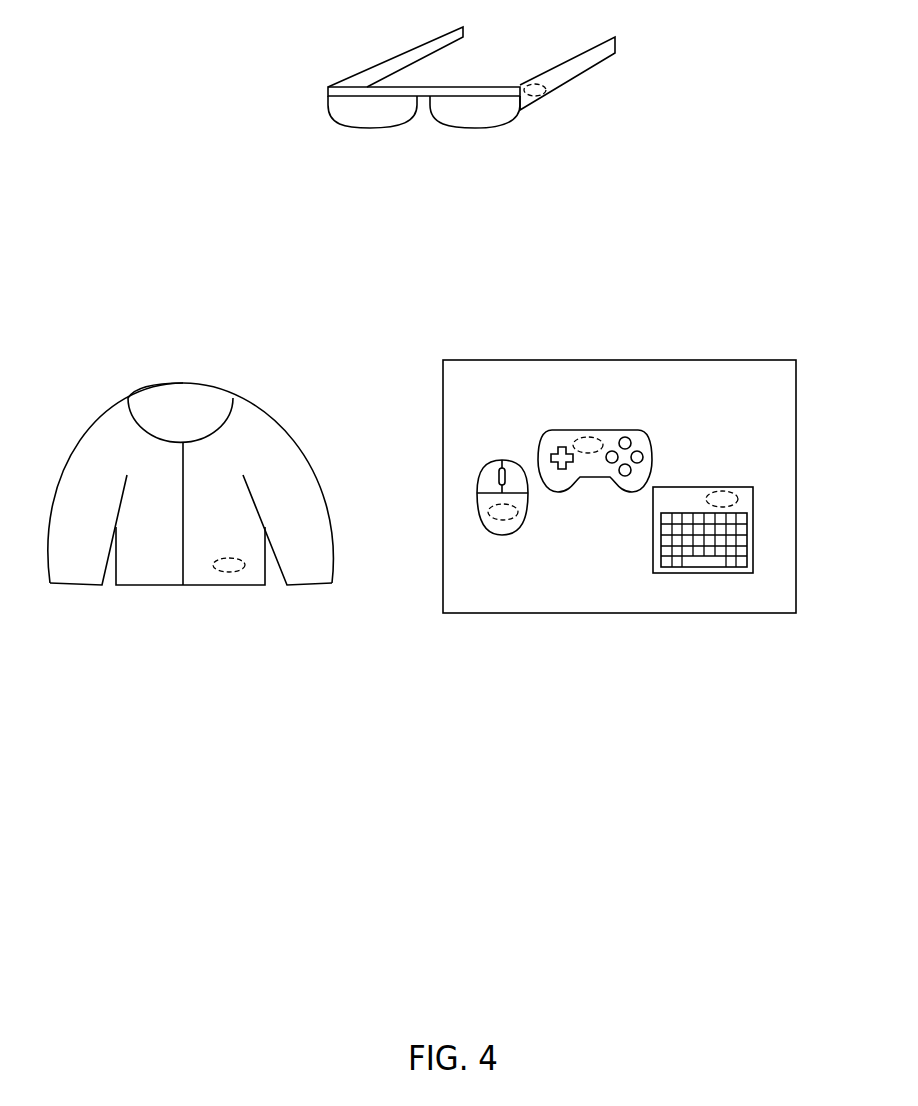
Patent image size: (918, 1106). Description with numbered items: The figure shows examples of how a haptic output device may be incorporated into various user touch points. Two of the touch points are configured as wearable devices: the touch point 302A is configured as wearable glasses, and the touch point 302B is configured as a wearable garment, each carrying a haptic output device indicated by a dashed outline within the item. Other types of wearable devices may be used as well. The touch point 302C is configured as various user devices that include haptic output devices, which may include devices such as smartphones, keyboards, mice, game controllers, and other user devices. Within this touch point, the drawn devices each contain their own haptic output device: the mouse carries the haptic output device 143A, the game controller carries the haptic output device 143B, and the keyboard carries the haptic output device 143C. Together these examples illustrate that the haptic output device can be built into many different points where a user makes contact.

The touch point 302A is at (615, 45).
The touch point 302B is at (273, 423).
The touch point 302C is at (796, 445).
The haptic output device 143A is at (503, 519).
The haptic output device 143B is at (596, 437).
The haptic output device 143C is at (728, 492).